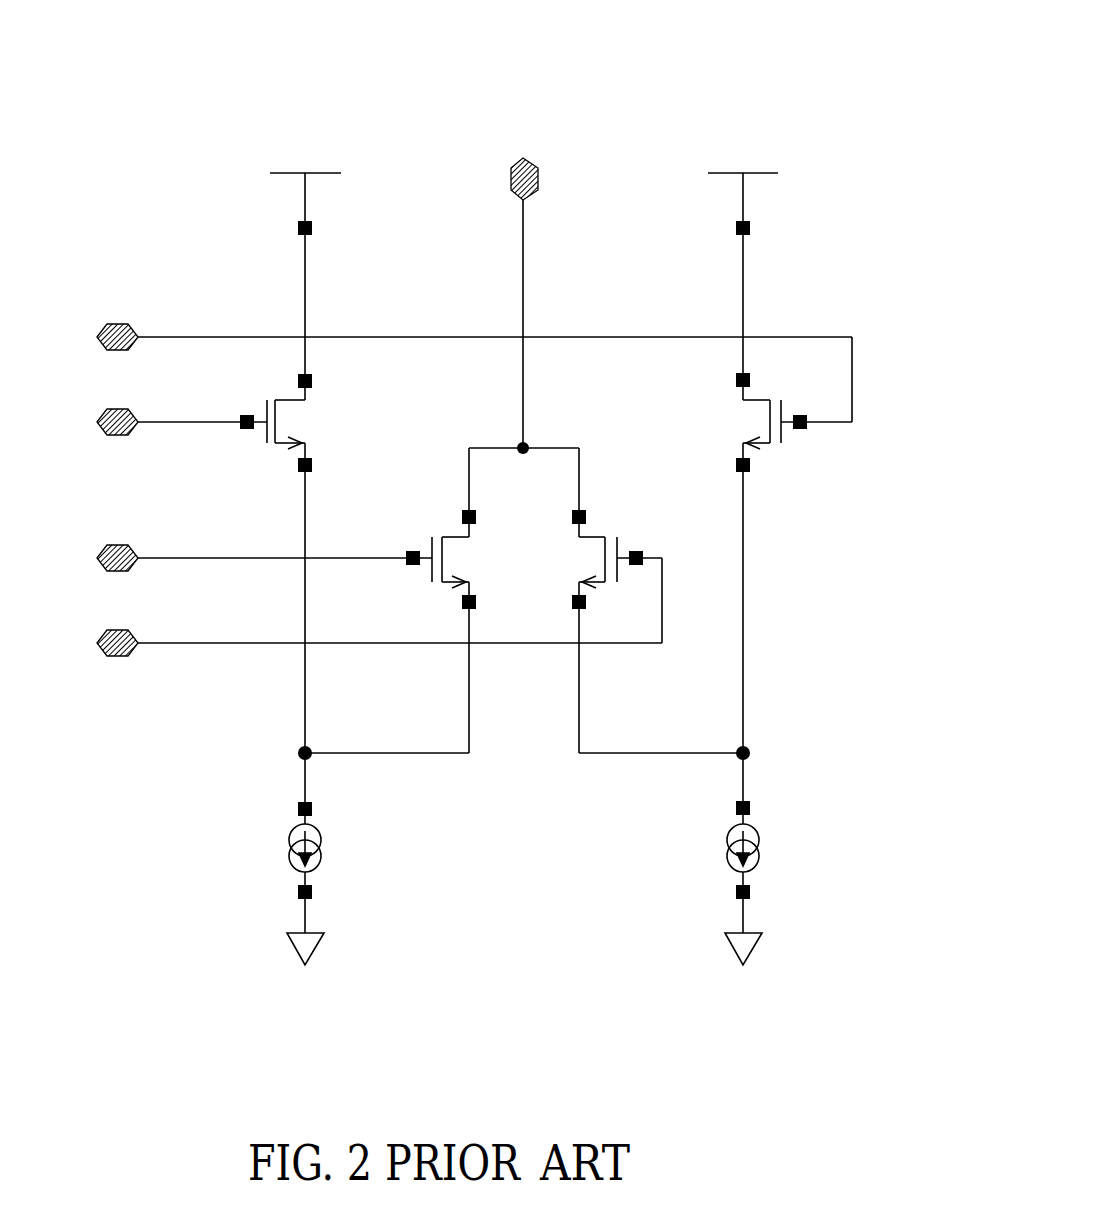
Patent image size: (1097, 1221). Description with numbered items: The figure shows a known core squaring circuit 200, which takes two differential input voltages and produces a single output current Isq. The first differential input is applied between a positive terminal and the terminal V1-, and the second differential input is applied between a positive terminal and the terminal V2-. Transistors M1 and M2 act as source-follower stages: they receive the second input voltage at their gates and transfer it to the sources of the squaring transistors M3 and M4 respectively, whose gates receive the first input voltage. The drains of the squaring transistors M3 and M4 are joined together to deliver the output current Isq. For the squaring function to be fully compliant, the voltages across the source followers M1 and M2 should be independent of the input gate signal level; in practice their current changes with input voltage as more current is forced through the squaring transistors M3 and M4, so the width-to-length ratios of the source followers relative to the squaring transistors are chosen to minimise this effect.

The core squaring circuit 200 is at (692, 78).
The transistor M1 is at (321, 418).
The transistor M2 is at (723, 418).
The squaring transistor M3 is at (475, 550).
The squaring transistor M4 is at (574, 550).
The differential input voltage terminal V2- is at (447, 422).
The differential input voltage terminal V1- is at (352, 643).
The output current Isq is at (520, 291).